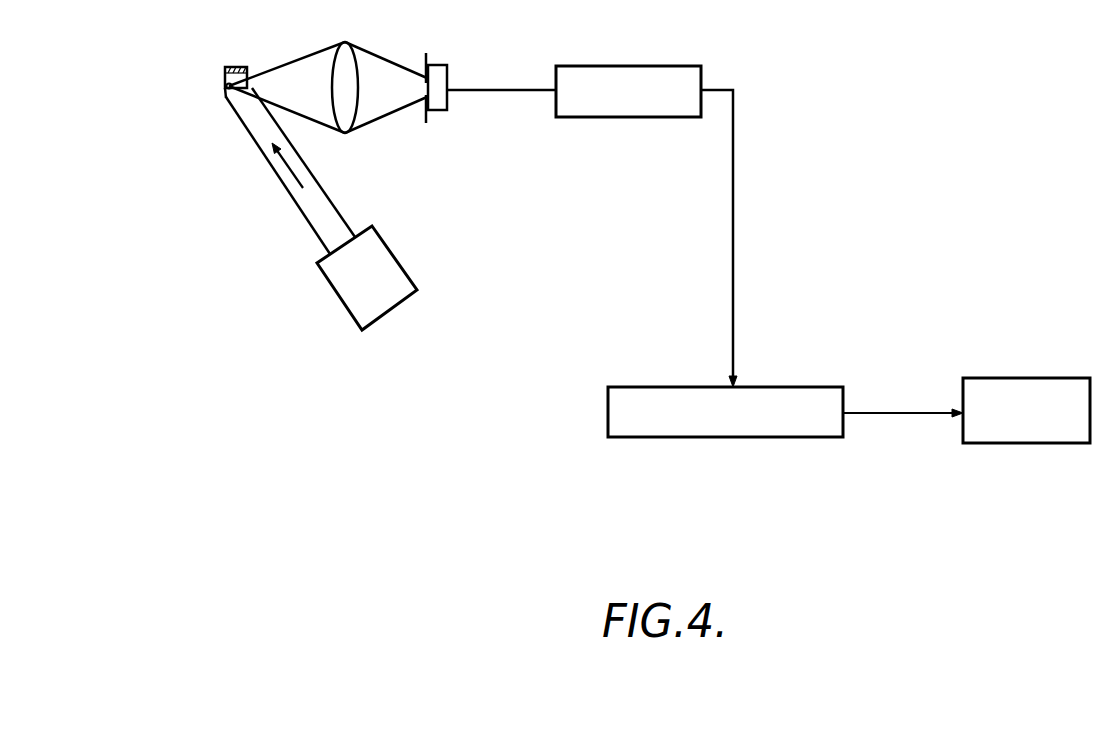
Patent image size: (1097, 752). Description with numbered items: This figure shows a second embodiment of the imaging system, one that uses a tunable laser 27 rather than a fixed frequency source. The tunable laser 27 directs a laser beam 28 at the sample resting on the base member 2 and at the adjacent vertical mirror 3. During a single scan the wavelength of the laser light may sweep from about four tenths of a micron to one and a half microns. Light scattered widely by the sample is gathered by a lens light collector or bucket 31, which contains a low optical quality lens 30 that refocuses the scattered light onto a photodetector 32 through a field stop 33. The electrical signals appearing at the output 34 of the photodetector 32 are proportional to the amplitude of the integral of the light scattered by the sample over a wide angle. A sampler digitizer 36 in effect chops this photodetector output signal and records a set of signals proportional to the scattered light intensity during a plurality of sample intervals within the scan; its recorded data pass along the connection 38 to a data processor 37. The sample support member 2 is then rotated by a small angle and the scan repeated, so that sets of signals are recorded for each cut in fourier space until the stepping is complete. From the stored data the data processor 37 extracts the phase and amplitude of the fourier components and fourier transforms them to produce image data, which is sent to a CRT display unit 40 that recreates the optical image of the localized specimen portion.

The base member 2 is at (225, 83).
The vertical mirror 3 is at (232, 67).
The tunable laser 27 is at (330, 278).
The laser beam 28 is at (275, 170).
The low optical quality lens 30 is at (346, 134).
The lens light collector 31 is at (402, 38).
The photodetector 32 is at (433, 113).
The field stop 33 is at (428, 56).
The output 34 is at (483, 88).
The sampler digitizer 36 is at (640, 66).
The data processor 37 is at (640, 387).
The digitizer output line 38 is at (733, 204).
The CRT display unit 40 is at (1037, 378).